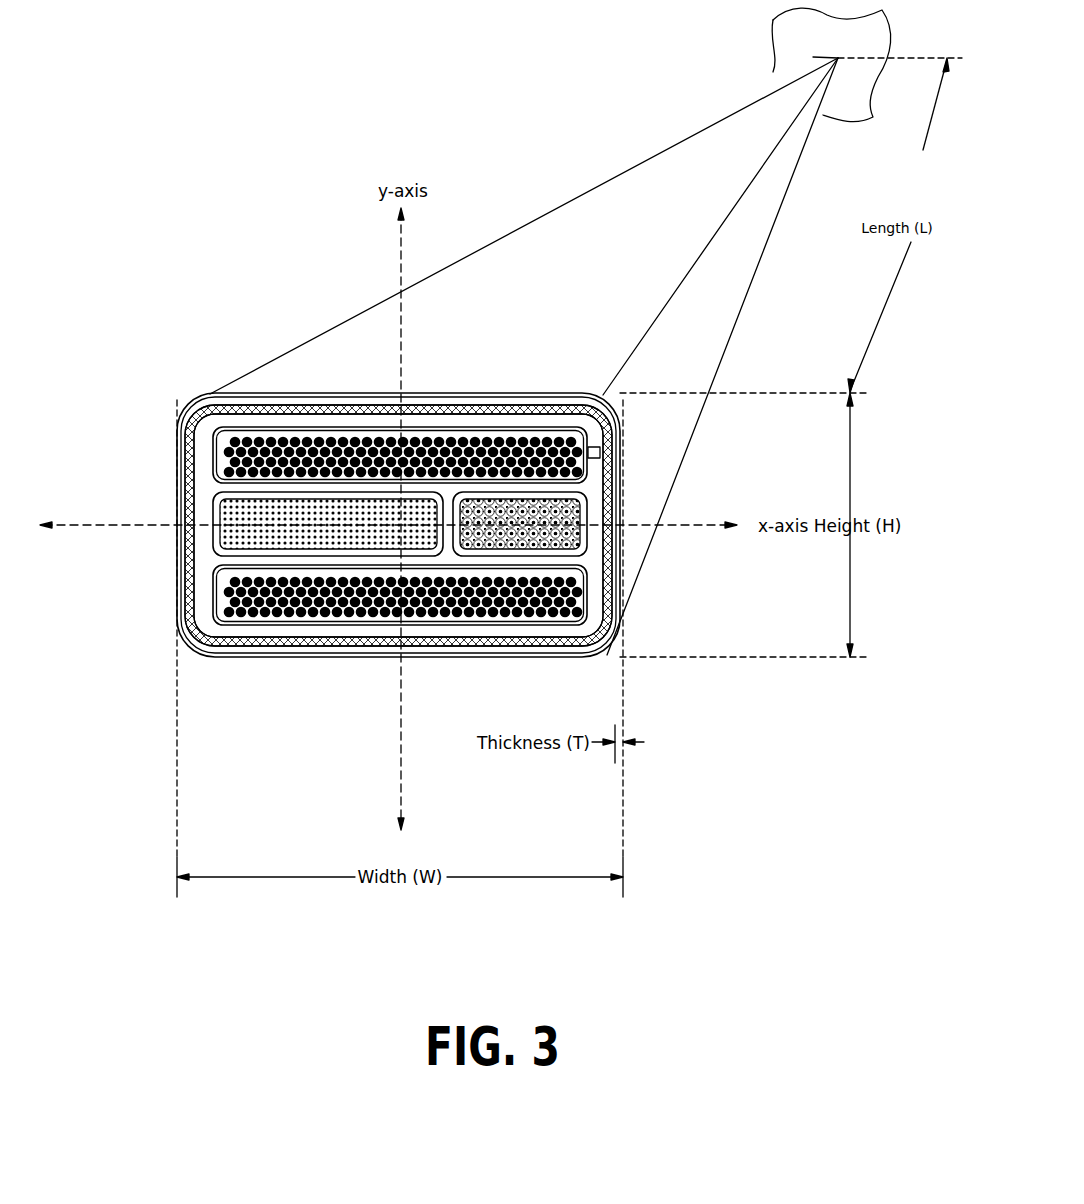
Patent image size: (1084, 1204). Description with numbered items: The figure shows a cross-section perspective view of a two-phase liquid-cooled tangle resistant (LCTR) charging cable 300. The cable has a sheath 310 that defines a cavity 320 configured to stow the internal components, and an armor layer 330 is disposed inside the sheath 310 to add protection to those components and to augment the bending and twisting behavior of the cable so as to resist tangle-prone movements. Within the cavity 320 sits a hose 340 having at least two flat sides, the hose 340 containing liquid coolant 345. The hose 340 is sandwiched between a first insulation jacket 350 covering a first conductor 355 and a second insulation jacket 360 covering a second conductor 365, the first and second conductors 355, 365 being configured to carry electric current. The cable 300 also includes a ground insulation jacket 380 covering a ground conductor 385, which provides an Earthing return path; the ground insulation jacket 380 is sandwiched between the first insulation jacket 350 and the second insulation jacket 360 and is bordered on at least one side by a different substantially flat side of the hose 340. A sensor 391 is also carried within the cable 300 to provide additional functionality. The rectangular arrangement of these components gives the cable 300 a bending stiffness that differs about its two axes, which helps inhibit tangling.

The LCTR charging cable 300 is at (247, 221).
The sheath 310 is at (197, 414).
The cavity 320 is at (203, 445).
The armor layer 330 is at (190, 478).
The hose 340 is at (218, 512).
The liquid coolant 345 is at (240, 548).
The first insulation jacket 350 is at (267, 427).
The first conductor 355 is at (338, 440).
The second insulation jacket 360 is at (257, 625).
The second conductor 365 is at (335, 622).
The ground insulation jacket 380 is at (572, 552).
The ground conductor 385 is at (573, 528).
The sensor 391 is at (613, 438).